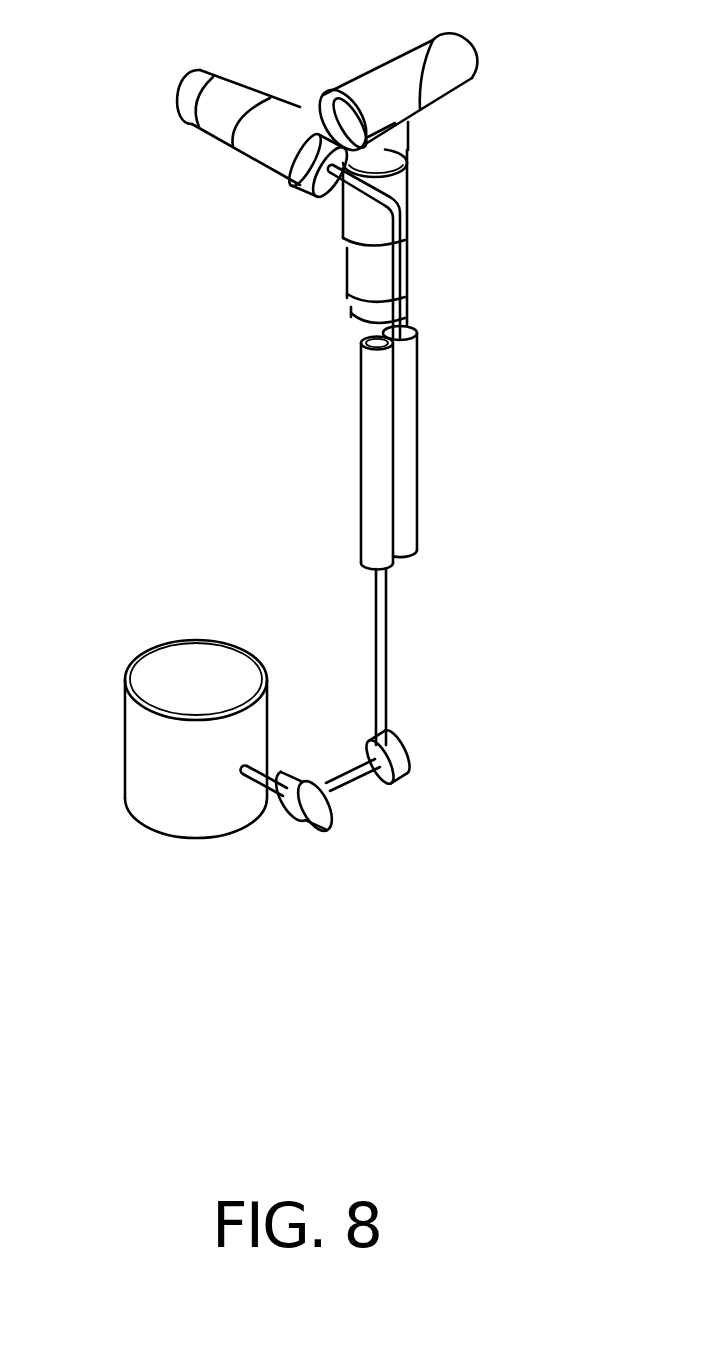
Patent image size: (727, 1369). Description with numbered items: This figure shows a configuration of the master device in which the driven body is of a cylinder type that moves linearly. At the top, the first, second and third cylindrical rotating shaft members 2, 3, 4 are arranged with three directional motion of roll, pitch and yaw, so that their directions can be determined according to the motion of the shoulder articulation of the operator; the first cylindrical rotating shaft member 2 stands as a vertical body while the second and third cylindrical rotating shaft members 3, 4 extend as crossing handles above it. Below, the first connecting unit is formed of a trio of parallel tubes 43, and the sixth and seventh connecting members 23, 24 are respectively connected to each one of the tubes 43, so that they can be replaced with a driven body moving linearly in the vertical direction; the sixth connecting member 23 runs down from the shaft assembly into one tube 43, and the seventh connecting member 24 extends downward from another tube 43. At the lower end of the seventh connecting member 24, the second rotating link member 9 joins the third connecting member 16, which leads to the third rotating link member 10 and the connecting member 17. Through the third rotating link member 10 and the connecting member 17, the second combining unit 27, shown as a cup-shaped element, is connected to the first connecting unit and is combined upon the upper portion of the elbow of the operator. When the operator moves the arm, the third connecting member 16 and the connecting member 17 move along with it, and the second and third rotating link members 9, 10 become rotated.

The first cylindrical rotating shaft member 2 is at (357, 267).
The second cylindrical rotating shaft member 3 is at (440, 85).
The third cylindrical rotating shaft member 4 is at (207, 125).
The sixth connecting member 23 is at (402, 268).
The tubes 43 is at (360, 447).
The seventh connecting member 24 is at (387, 648).
The second rotating link member 9 is at (407, 743).
The third connecting member 16 is at (347, 760).
The third rotating link member 10 is at (313, 812).
The connecting member 17 is at (257, 780).
The second combining unit 27 is at (125, 737).